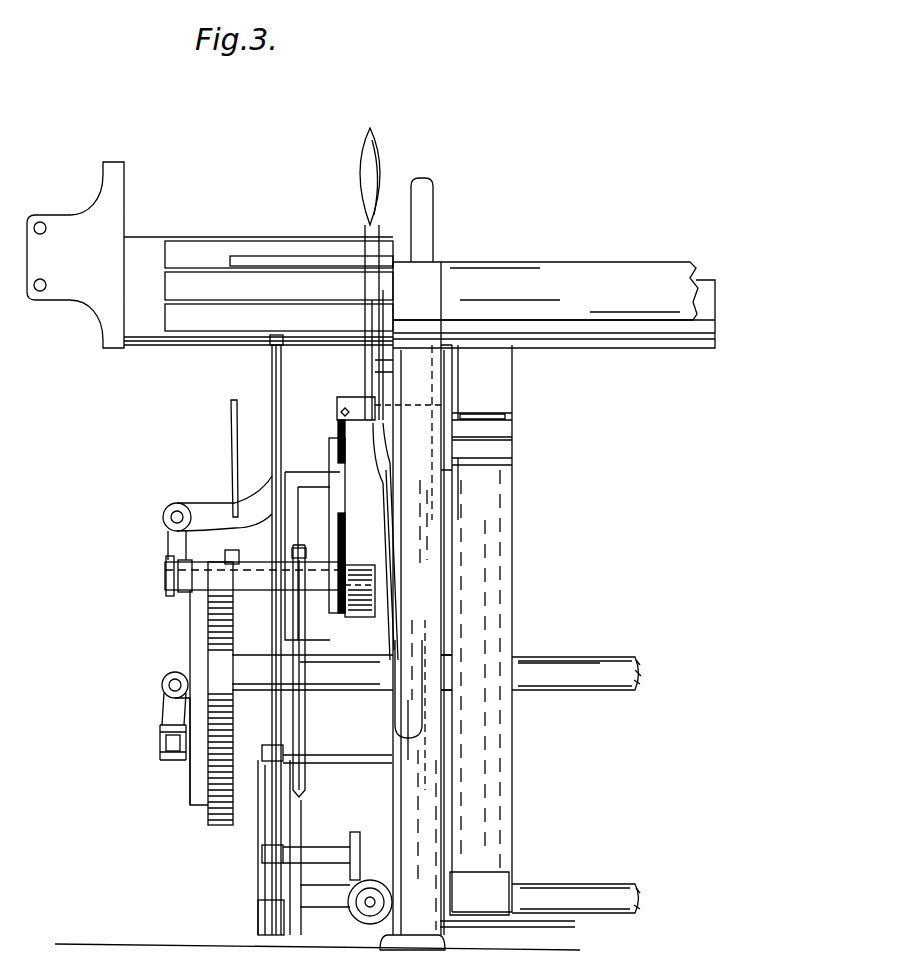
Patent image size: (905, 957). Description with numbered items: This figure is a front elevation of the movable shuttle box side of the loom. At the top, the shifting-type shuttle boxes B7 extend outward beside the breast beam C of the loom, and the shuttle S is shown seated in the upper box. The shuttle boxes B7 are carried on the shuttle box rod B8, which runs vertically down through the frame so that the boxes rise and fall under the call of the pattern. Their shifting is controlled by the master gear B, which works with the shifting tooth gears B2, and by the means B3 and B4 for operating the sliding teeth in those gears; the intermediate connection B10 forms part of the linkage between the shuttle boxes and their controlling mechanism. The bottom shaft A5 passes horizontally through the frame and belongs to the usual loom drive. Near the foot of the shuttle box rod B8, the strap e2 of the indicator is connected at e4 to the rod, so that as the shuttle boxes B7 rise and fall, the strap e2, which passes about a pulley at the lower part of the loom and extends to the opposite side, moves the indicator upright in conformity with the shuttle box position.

The shuttle boxes B7 is at (205, 252).
The breast beam C is at (554, 305).
The shuttle S is at (360, 176).
The shuttle box rod B8 is at (283, 422).
The means for operating the sliding teeth B4 is at (231, 450).
The shifting tooth gears B2 is at (205, 562).
The intermediate connection B10 is at (355, 518).
The master gear B is at (208, 636).
The bottom shaft A5 is at (572, 660).
The means for operating the sliding teeth B3 is at (168, 708).
The strap connection point e4 is at (355, 832).
The strap e2 is at (572, 924).